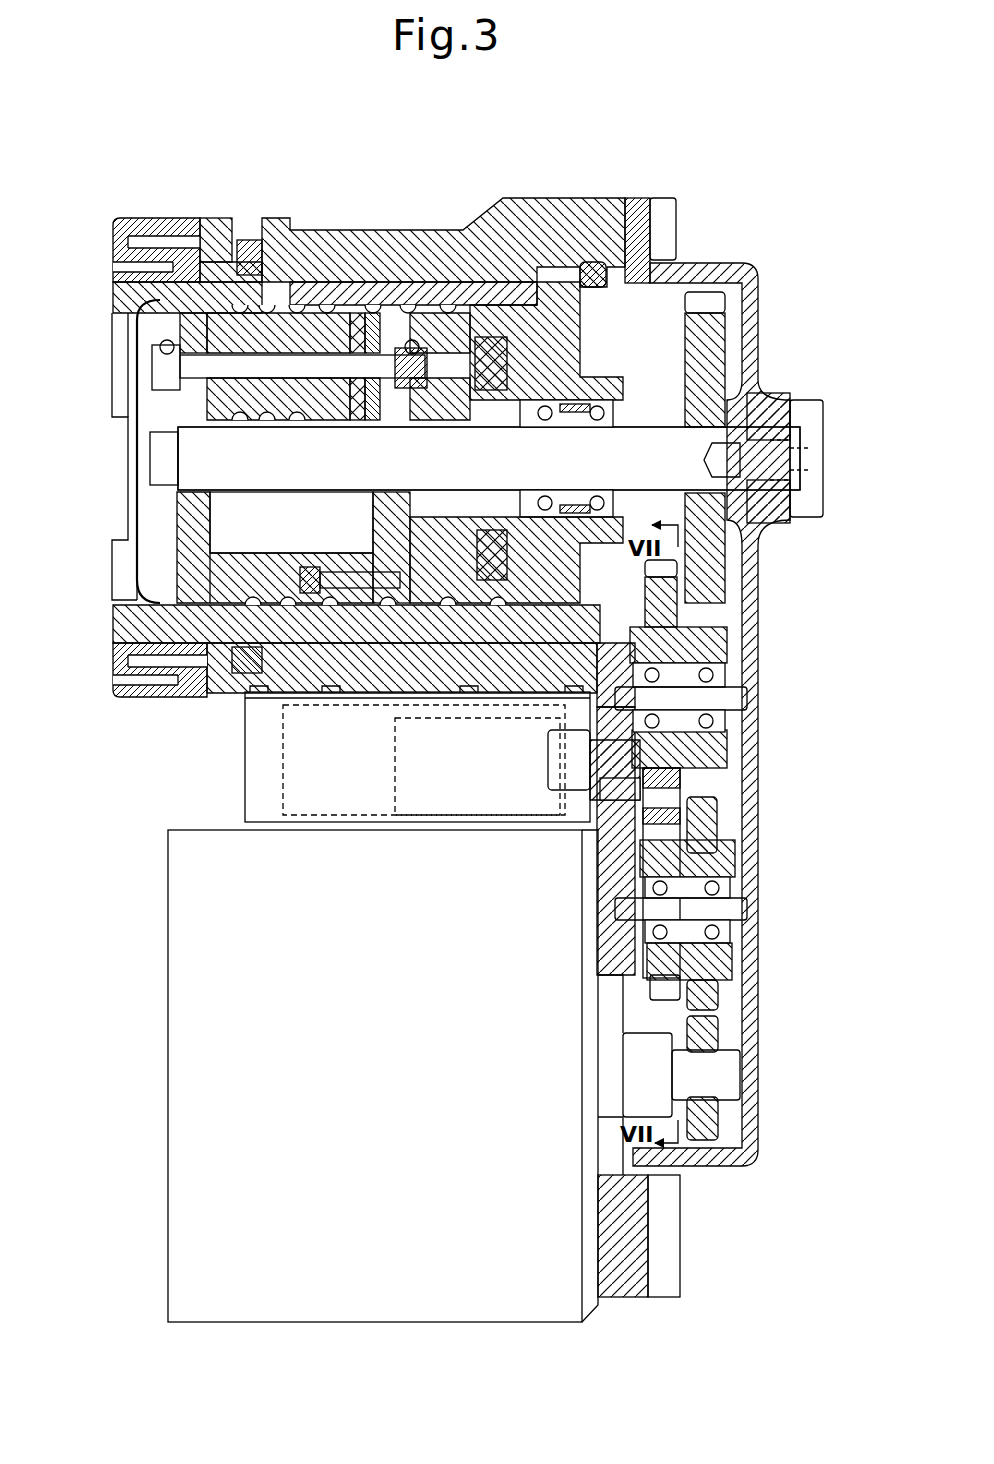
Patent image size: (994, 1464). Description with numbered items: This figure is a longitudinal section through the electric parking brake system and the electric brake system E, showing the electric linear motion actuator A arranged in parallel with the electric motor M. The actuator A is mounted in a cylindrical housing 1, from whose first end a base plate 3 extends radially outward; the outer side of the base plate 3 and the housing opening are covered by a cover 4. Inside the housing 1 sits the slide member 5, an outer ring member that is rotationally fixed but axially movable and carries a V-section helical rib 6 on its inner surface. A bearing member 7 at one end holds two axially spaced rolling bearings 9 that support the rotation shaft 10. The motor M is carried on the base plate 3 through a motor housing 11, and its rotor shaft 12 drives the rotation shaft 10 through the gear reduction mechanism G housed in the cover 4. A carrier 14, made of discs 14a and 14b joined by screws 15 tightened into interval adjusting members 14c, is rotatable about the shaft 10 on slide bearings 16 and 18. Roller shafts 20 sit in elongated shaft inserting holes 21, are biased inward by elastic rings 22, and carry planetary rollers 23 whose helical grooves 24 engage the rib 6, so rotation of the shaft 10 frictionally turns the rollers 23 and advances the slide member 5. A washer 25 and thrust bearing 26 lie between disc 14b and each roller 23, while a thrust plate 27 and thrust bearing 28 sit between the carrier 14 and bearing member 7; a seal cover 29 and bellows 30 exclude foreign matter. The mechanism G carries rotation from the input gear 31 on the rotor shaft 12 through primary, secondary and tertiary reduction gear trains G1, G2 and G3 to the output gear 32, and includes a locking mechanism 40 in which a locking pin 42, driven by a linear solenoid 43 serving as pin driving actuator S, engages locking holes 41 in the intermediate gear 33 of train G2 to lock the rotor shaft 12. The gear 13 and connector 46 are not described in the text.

The housing 1 is at (285, 255).
The base plate 3 is at (612, 1248).
The cover 4 is at (758, 330).
The slide member 5 is at (306, 285).
The helical rib 6 is at (456, 300).
The bearing member 7 is at (670, 205).
The rolling bearings 9 is at (553, 428).
The rotation shaft 10 is at (262, 480).
The motor housing 11 is at (323, 822).
The rotor shaft 12 is at (640, 1078).
The gear 13 is at (732, 300).
The carrier 14 is at (168, 590).
The disc 14a is at (150, 286).
The disc 14b is at (403, 300).
The interval adjusting members 14c is at (118, 668).
The screws 15 is at (188, 697).
The slide bearing 16 is at (388, 422).
The slide bearing 18 is at (137, 450).
The roller shafts 20 is at (241, 354).
The shaft inserting holes 21 is at (178, 388).
The elastic rings 22 is at (162, 345).
The planetary roller 23 is at (214, 250).
The helical grooves 24 is at (301, 428).
The washer 25 is at (366, 328).
The thrust bearing 26 is at (336, 292).
The thrust plate 27 is at (506, 262).
The thrust bearing 28 is at (534, 265).
The seal cover 29 is at (130, 374).
The bellows 30 is at (118, 232).
The input gear 31 is at (706, 1118).
The output gear 32 is at (712, 366).
The intermediate gear 33 is at (722, 588).
The locking mechanism 40 is at (686, 786).
The locking holes 41 is at (690, 818).
The locking pin 42 is at (612, 792).
The linear solenoid 43 is at (427, 793).
The connector 46 is at (585, 780).
The electric linear motion actuator A is at (195, 212).
The electric brake system E is at (712, 232).
The gear reduction mechanism G is at (790, 690).
The primary reduction gear train G1 is at (733, 1040).
The secondary reduction gear train G2 is at (640, 862).
The tertiary reduction gear train G3 is at (735, 645).
The electric motor M is at (240, 980).
The pin driving actuator S is at (455, 803).